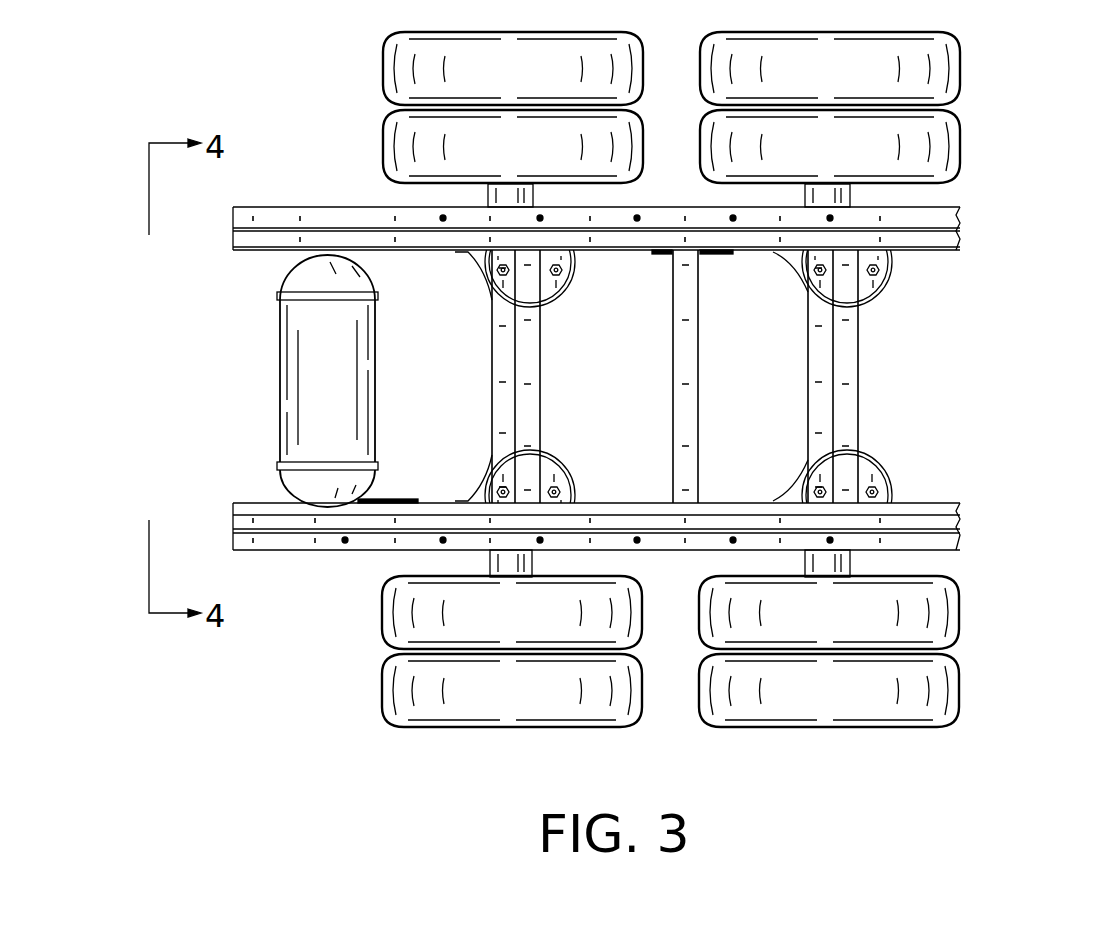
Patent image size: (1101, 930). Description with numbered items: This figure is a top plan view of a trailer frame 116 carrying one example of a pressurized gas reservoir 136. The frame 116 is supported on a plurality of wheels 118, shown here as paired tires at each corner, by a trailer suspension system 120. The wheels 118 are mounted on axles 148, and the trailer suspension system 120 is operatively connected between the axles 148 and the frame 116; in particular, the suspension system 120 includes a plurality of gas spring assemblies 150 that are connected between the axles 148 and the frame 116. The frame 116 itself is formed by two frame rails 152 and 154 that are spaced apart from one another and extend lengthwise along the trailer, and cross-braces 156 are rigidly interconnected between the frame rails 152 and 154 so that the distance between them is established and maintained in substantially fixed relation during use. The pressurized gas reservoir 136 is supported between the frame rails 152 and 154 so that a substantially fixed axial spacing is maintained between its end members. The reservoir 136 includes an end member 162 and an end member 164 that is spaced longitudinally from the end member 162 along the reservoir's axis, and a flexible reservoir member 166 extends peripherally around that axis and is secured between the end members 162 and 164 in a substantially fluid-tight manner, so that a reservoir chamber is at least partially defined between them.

The frame 116 is at (334, 198).
The wheels 118 is at (935, 145).
The trailer suspension system 120 is at (930, 278).
The pressurized gas reservoir 136 is at (258, 386).
The axles 148 is at (498, 345).
The gas spring assemblies 150 is at (560, 278).
The frame rail 152 is at (945, 222).
The frame rail 154 is at (948, 541).
The cross-braces 156 is at (530, 363).
The end member 162 is at (275, 271).
The end member 164 is at (332, 488).
The flexible reservoir member 166 is at (300, 327).